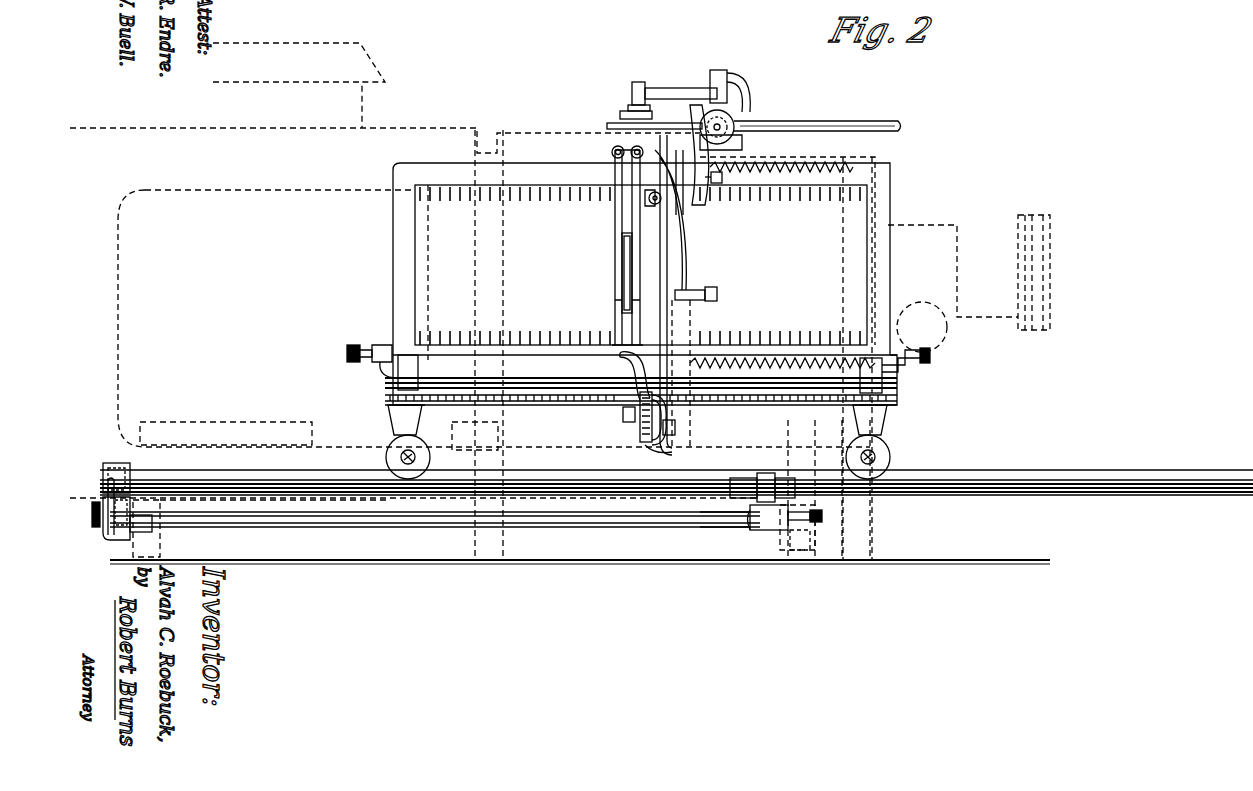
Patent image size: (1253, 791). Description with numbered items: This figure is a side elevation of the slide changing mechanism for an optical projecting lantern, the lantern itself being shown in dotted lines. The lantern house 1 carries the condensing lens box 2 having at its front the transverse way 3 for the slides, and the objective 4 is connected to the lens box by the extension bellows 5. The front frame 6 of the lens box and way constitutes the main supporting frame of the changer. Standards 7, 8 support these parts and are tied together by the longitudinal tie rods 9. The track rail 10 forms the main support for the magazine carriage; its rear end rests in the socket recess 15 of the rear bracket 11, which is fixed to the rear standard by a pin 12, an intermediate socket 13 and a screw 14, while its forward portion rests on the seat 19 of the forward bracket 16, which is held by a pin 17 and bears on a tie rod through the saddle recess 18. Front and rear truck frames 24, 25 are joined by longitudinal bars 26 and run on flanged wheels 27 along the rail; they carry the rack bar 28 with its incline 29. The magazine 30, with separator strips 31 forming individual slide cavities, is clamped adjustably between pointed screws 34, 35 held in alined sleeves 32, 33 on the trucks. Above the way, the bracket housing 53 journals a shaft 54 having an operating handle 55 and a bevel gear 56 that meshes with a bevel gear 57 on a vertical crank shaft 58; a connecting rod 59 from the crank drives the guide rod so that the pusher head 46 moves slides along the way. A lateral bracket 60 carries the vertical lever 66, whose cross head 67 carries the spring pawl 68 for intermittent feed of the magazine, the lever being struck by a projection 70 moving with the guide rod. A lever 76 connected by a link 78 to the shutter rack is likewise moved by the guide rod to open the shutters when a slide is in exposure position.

The lantern house 1 is at (385, 88).
The condensing lens box 2 is at (547, 132).
The transverse way 3 is at (614, 214).
The objective 4 is at (958, 226).
The extension bellows 5 is at (847, 168).
The front frame 6 is at (668, 252).
The rear standard 7 is at (170, 558).
The forward standard 8 is at (805, 552).
The longitudinal tie rods 9 is at (585, 527).
The track rail 10 is at (241, 479).
The rear bracket 11 is at (106, 537).
The pin 12 is at (160, 530).
The intermediate socket 13 is at (107, 498).
The screw 14 is at (92, 516).
The socket recess 15 is at (118, 463).
The forward bracket 16 is at (762, 530).
The pin 17 is at (811, 516).
The saddle recess 18 is at (745, 527).
The seat 19 is at (768, 474).
The front truck frame 24 is at (884, 422).
The rear truck frame 25 is at (392, 426).
The longitudinal bars 26 is at (600, 394).
The flanged wheels 27 is at (385, 457).
The rack bar 28 is at (545, 406).
The incline 29 is at (392, 394).
The magazine 30 is at (392, 218).
The separator strips 31 is at (475, 201).
The sleeve 32 is at (913, 366).
The sleeve 33 is at (381, 345).
The pointed screw 34 is at (346, 353).
The pointed screw 35 is at (932, 355).
The pusher head 46 is at (621, 256).
The bracket housing 53 is at (707, 195).
The shaft 54 is at (752, 116).
The operating handle 55 is at (832, 124).
The bevel gear 56 is at (745, 138).
The bevel gear 57 is at (745, 100).
The crank shaft 58 is at (719, 70).
The connecting rod 59 is at (633, 93).
The lateral bracket 60 is at (622, 378).
The vertical lever 66 is at (686, 276).
The cross head 67 is at (680, 443).
The spring pawl 68 is at (672, 450).
The projection 70 is at (632, 158).
The lever 76 is at (685, 182).
The link 78 is at (661, 202).